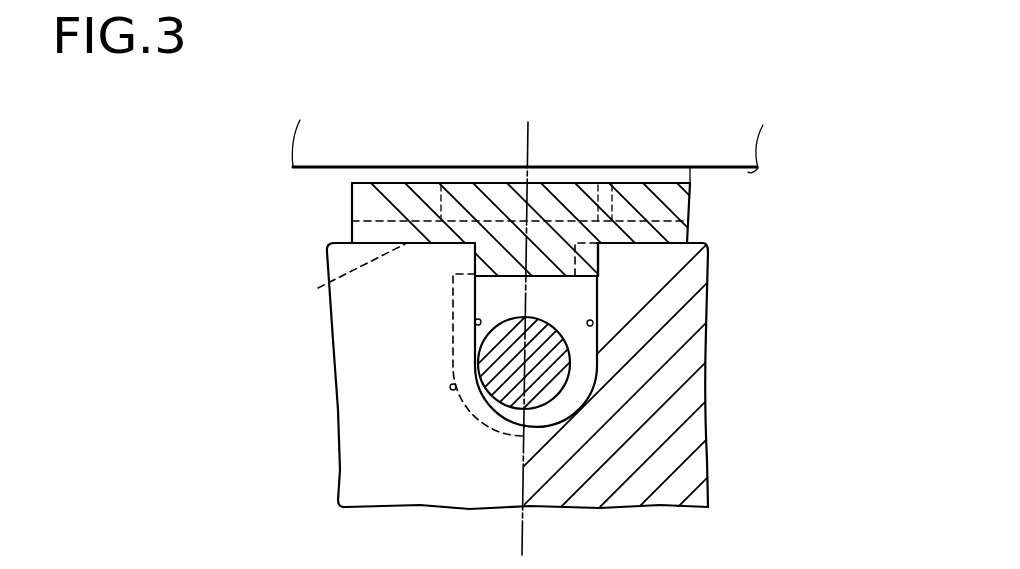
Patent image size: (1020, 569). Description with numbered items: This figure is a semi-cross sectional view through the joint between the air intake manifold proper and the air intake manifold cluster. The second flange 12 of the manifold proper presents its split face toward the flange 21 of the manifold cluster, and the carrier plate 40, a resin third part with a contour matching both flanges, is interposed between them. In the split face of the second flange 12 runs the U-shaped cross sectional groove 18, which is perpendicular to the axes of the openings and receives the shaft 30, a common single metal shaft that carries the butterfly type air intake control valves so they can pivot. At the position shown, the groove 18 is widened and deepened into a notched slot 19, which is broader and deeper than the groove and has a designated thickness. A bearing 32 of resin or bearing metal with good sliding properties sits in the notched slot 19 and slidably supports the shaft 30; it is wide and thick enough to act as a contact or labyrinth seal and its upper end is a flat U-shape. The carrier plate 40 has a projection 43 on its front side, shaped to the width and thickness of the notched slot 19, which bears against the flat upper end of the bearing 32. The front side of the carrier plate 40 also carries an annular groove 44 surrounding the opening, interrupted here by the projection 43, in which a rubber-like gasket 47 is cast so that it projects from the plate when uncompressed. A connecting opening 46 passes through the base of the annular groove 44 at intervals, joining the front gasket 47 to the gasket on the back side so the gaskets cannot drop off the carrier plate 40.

The second flange 12 is at (682, 457).
The U-shaped cross sectional groove 18 is at (476, 322).
The notched slot 19 is at (450, 388).
The flange 21 is at (742, 150).
The shaft 30 is at (495, 400).
The bearing 32 is at (568, 298).
The carrier plate 40 is at (373, 202).
The projection 43 is at (560, 256).
The annular groove 44 is at (322, 286).
The connecting opening 46 is at (477, 200).
The gasket 47 is at (572, 170).